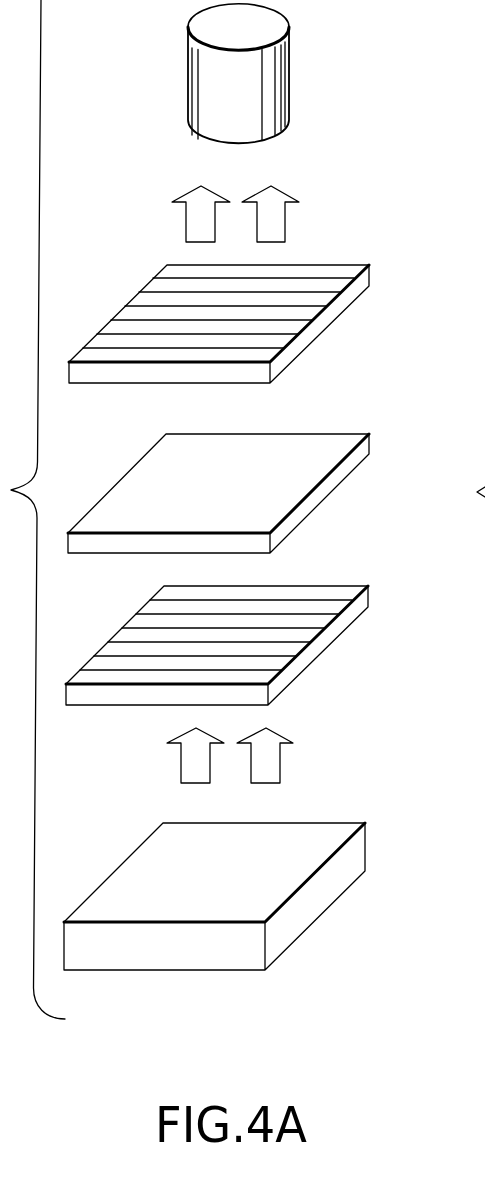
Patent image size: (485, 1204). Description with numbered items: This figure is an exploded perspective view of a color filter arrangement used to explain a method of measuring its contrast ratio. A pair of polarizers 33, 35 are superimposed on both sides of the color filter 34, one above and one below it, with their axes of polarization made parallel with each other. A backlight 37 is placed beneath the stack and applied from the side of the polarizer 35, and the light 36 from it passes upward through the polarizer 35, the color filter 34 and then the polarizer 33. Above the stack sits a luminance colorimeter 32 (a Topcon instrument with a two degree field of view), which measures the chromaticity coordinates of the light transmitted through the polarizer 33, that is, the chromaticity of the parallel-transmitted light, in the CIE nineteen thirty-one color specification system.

The luminance colorimeter 32 is at (270, 86).
The polarizer 33 is at (335, 310).
The color filter 34 is at (328, 487).
The polarizer 35 is at (322, 645).
The incident light 36 is at (283, 762).
The backlight 37 is at (318, 902).